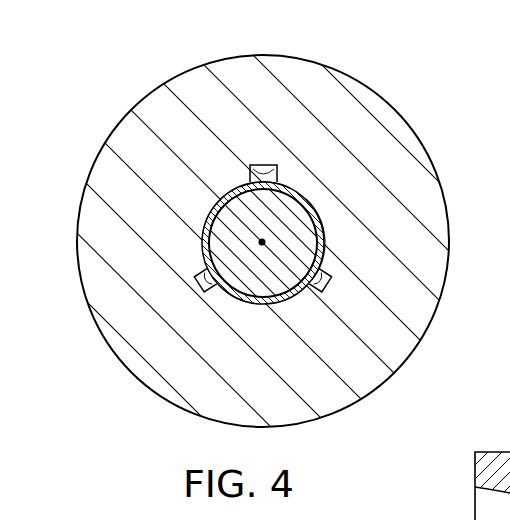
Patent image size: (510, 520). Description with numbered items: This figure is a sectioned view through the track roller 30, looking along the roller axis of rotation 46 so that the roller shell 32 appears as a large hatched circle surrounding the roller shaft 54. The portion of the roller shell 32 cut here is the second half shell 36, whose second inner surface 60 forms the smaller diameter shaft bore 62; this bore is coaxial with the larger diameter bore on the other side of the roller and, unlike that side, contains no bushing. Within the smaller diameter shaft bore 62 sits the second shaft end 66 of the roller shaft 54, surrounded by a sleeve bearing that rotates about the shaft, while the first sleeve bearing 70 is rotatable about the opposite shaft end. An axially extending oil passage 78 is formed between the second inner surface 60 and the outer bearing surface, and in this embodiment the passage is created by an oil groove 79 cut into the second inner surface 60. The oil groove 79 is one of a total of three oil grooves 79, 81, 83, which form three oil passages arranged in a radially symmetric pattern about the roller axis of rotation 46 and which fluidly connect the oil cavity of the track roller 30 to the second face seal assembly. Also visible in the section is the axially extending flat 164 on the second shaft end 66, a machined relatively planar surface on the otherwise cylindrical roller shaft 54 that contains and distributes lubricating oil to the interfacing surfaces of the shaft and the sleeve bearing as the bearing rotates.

The track roller 30 is at (255, 260).
The roller shell 32 is at (384, 97).
The second half shell 36 is at (398, 147).
The roller shaft 54 is at (255, 260).
The second inner surface 60 is at (236, 211).
The smaller diameter shaft bore 62 is at (202, 243).
The second shaft end 66 is at (255, 260).
The first sleeve bearing 70 is at (265, 304).
The roller axis of rotation 46 is at (250, 253).
The oil groove 79 is at (278, 170).
The axially extending oil passage 78 is at (292, 175).
The axially extending flat 164 is at (318, 232).
The oil groove 81 is at (320, 296).
The oil groove 83 is at (207, 294).